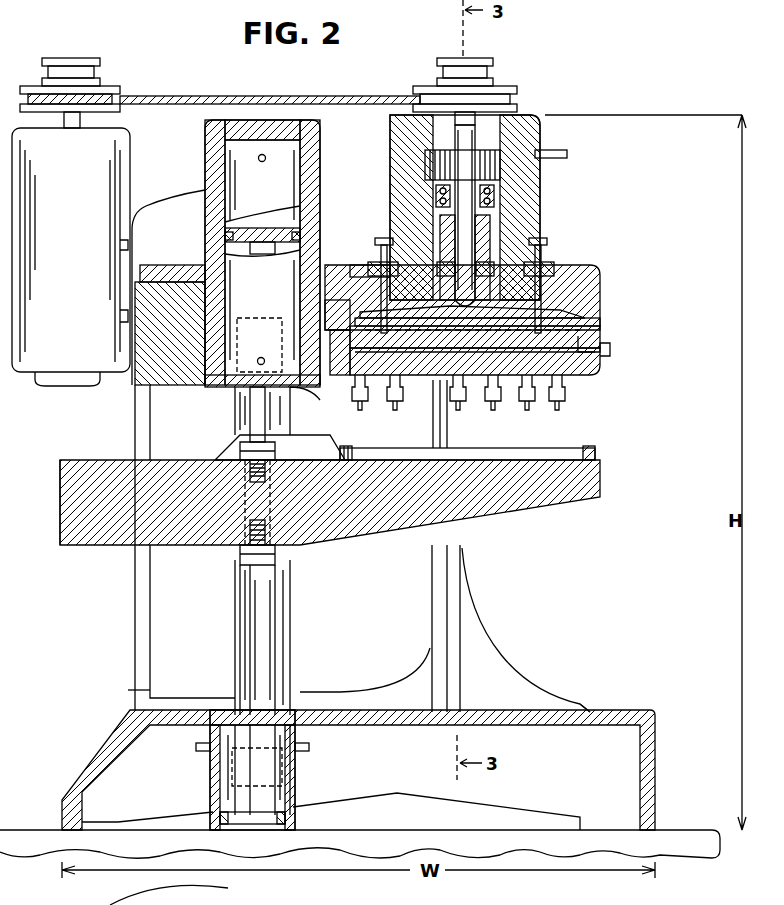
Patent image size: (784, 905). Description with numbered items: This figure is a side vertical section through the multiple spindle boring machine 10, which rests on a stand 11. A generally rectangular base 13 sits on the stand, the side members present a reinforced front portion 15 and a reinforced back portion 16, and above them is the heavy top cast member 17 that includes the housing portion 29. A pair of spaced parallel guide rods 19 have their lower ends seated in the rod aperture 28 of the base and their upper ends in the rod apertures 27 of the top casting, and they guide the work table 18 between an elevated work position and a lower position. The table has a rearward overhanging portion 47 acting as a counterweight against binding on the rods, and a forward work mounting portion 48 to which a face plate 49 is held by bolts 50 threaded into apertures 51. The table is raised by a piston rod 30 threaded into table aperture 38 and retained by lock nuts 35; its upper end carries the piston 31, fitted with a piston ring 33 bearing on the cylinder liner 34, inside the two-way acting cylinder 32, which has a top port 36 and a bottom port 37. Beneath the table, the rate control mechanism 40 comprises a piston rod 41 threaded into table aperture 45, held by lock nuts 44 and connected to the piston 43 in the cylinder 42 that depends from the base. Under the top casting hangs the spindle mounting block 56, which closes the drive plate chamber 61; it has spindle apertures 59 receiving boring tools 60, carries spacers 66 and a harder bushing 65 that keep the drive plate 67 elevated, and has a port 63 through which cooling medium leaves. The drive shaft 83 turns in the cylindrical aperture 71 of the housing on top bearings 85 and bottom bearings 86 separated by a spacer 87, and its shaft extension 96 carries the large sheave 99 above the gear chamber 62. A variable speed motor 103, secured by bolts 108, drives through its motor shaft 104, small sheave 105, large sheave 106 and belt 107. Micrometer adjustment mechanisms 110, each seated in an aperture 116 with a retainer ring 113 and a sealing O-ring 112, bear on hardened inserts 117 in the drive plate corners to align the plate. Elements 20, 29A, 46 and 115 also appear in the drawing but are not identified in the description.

The multiple spindle boring machine 10 is at (578, 668).
The stand 11 is at (681, 842).
The base 13 is at (655, 752).
The reinforced front portion 15 is at (450, 575).
The reinforced back portion 16 is at (165, 619).
The top cast member 17 is at (590, 265).
The work table 18 is at (596, 490).
The guide rods 19 is at (268, 633).
The threaded rod 20 is at (242, 548).
The rod apertures 27 is at (258, 316).
The rod aperture 28 is at (282, 762).
The housing portion 29 is at (520, 200).
The column 29A is at (140, 666).
The piston rod 30 is at (246, 402).
The piston 31 is at (272, 228).
The two-way acting cylinder 32 is at (312, 152).
The piston ring 33 is at (300, 238).
The cylinder liner 34 is at (296, 180).
The lock nuts 35 is at (246, 444).
The top port 36 is at (259, 164).
The bottom port 37 is at (263, 356).
The table aperture 38 is at (266, 476).
The rate control mechanism 40 is at (204, 780).
The piston rod 41 is at (258, 605).
The two-way acting cylinder 42 is at (295, 782).
The piston 43 is at (285, 805).
The lock nuts 44 is at (242, 572).
The table aperture 45 is at (266, 533).
The cap 46 is at (236, 386).
The overhanging portion 47 is at (70, 545).
The work mounting portion 48 is at (500, 448).
The face plate 49 is at (565, 448).
The bolts 50 is at (595, 450).
The apertures 51 is at (352, 448).
The spindle mounting block 56 is at (600, 372).
The spindle apertures 59 is at (372, 360).
The boring tool 60 is at (352, 394).
The drive plate chamber 61 is at (600, 336).
The gear chamber 62 is at (428, 150).
The port 63 is at (605, 342).
The bushing 65 is at (472, 326).
The spacers 66 is at (472, 340).
The drive plate 67 is at (560, 320).
The cylindrical aperture 71 is at (478, 228).
The drive shaft 83 is at (452, 252).
The top precision preloaded bearings 85 is at (494, 196).
The bottom precision preloaded bearings 86 is at (494, 285).
The spacer 87 is at (490, 250).
The shaft extension 96 is at (508, 110).
The large sheave 99 is at (500, 86).
The variable speed motor 103 is at (46, 200).
The motor shaft 104 is at (82, 120).
The small sheave 105 is at (98, 60).
The large sheave 106 is at (118, 88).
The belt 107 is at (232, 94).
The bolts 108 is at (118, 325).
The micrometer adjustment mechanisms 110 is at (548, 248).
The O-ring 112 is at (345, 305).
The retainer ring 113 is at (362, 276).
The bolt 115 is at (382, 238).
The aperture 116 is at (480, 279).
The hardened insert 117 is at (340, 349).